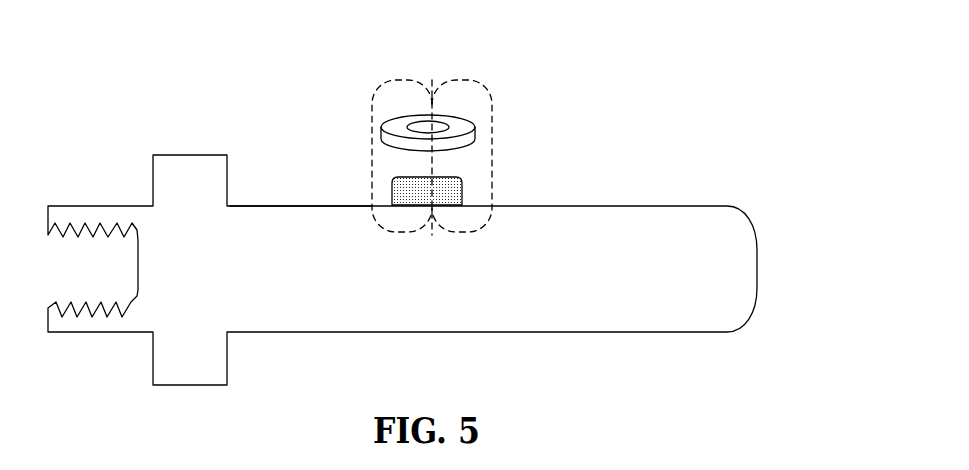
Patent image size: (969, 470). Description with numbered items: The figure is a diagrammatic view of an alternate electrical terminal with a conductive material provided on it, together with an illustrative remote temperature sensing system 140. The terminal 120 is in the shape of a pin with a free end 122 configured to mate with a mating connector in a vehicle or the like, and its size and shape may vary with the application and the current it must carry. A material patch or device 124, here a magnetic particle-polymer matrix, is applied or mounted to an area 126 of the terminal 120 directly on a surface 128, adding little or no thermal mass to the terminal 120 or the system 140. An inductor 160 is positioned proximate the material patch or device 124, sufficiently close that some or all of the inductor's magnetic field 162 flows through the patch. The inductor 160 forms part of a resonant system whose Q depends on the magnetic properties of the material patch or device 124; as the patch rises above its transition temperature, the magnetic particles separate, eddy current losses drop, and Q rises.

The terminal 120 is at (713, 172).
The free end 122 is at (713, 275).
The material patch or device 124 is at (463, 188).
The area 126 is at (432, 235).
The surface 128 is at (377, 205).
The remote temperature sensing system 140 is at (533, 60).
The inductor 160 is at (443, 113).
The magnetic field 162 is at (388, 83).